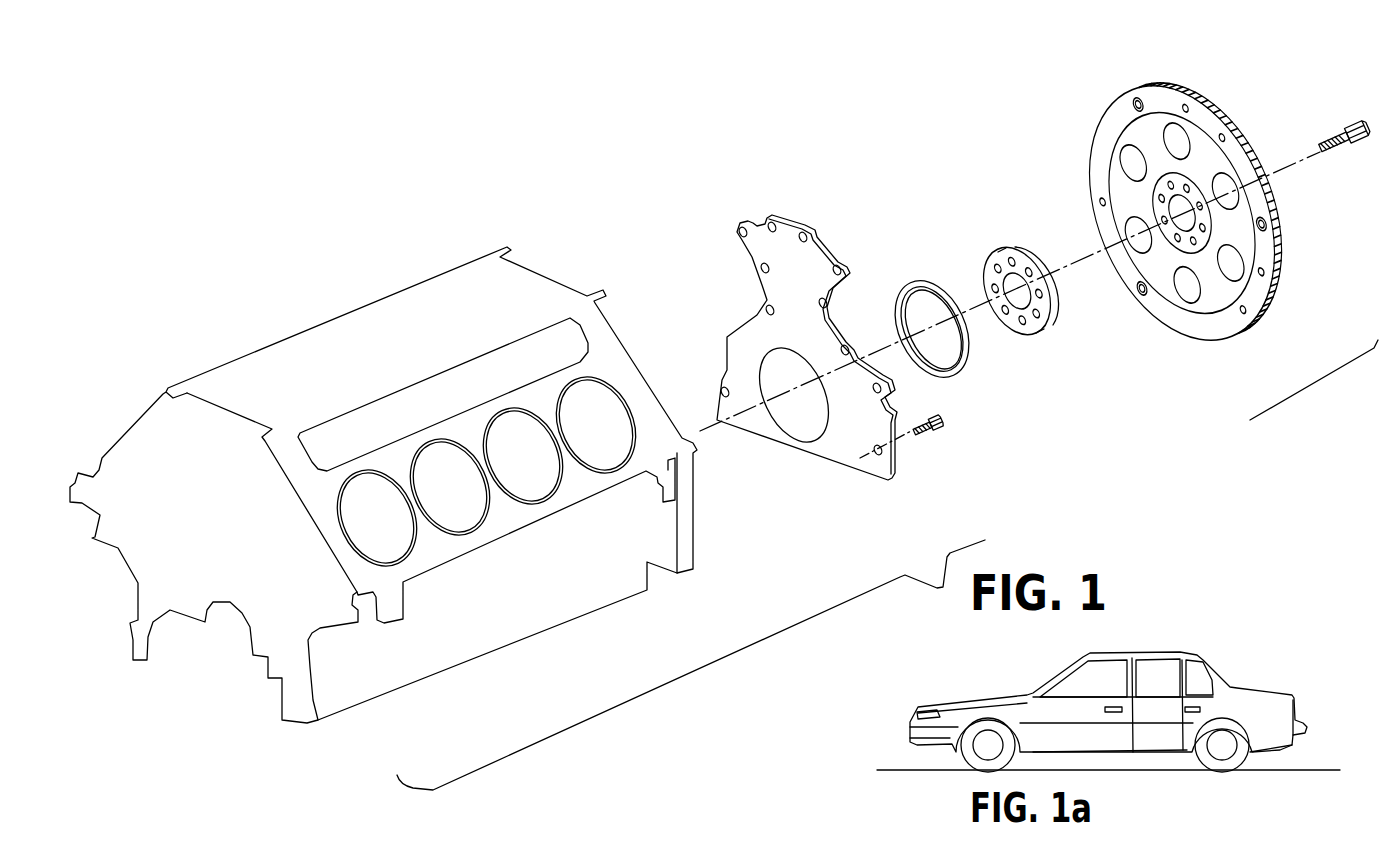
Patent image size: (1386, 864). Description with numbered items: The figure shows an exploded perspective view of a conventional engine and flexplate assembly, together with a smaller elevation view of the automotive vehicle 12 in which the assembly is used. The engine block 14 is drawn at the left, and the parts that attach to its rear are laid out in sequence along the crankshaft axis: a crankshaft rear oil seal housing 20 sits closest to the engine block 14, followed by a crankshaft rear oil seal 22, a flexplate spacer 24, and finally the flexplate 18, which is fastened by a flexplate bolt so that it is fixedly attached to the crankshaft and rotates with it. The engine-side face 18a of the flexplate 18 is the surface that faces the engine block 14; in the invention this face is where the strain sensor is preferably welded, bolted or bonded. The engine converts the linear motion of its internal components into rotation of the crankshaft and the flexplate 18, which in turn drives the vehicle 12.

In FIG. 1a, the vehicle 12 is at (1163, 653).
In FIG. 1, the engine block 14 is at (443, 287).
In FIG. 1, the flexplate 18 is at (1083, 147).
In FIG. 1, the engine-side face of the flexplate 18a is at (1193, 323).
In FIG. 1, the crankshaft rear oil seal housing 20 is at (768, 213).
In FIG. 1, the crankshaft rear oil seal 22 is at (925, 283).
In FIG. 1, the flexplate spacer 24 is at (1023, 245).